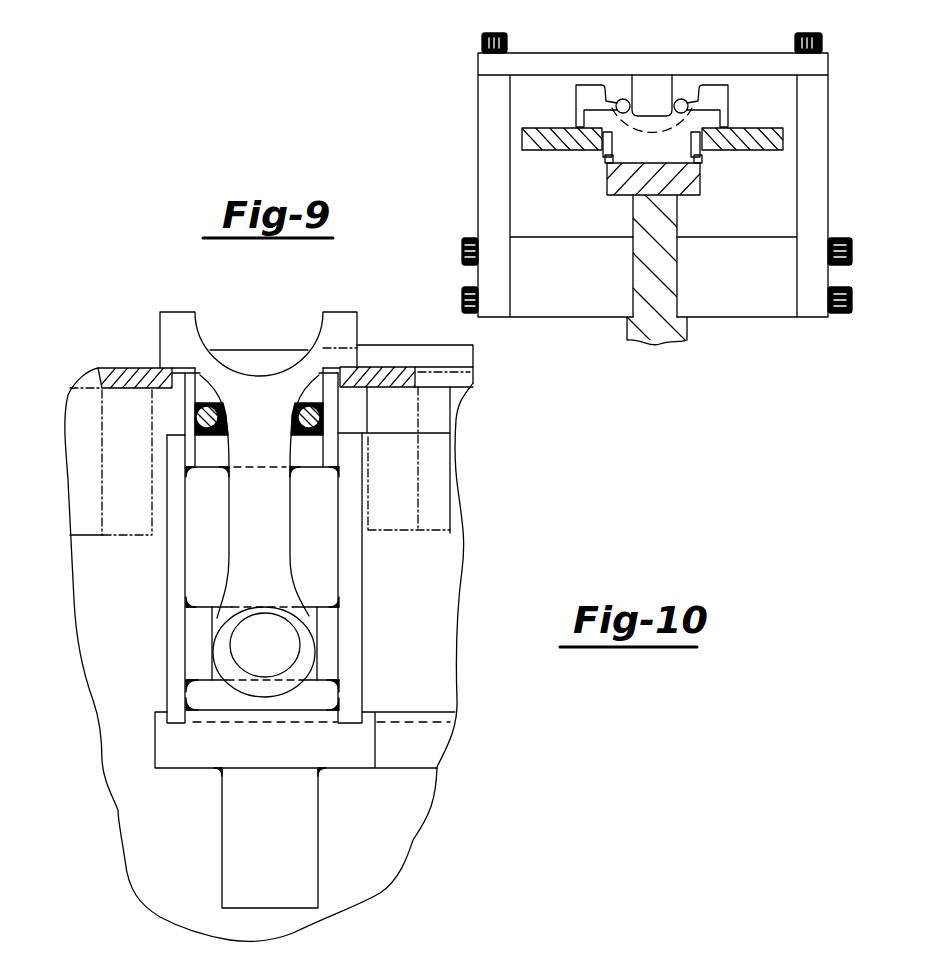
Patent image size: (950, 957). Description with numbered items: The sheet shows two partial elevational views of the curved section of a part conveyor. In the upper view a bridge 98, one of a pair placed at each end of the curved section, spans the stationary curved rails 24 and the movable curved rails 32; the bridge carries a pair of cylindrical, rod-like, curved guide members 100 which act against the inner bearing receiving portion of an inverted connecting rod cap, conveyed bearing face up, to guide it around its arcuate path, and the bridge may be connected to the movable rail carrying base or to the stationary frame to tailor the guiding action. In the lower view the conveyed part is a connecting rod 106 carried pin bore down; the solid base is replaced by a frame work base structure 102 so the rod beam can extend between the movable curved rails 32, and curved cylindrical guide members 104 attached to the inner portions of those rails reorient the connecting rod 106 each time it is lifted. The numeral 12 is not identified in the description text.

In FIG. 10, the tool holder 12 is at (713, 77).
In FIG. 10, the stationary curved rails 24 is at (525, 128).
In FIG. 9, the movable curved rails 32 is at (190, 418).
In FIG. 10, the movable curved rails 32 is at (607, 165).
In FIG. 10, the bridge 98 is at (562, 53).
In FIG. 10, the curved guide members 100 is at (616, 106).
In FIG. 9, the frame work base structure 102 is at (357, 588).
In FIG. 9, the guide members 104 is at (292, 413).
In FIG. 9, the connecting rod 106 is at (337, 312).